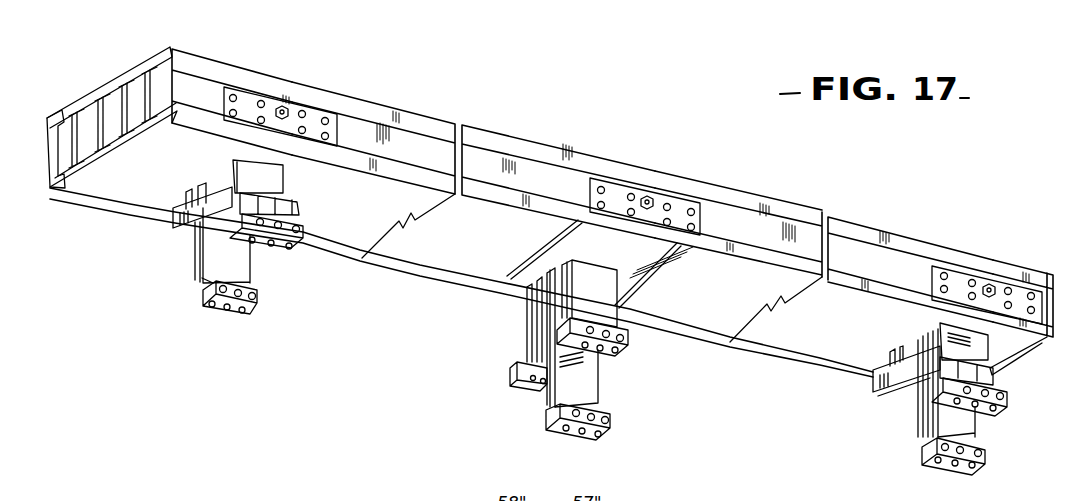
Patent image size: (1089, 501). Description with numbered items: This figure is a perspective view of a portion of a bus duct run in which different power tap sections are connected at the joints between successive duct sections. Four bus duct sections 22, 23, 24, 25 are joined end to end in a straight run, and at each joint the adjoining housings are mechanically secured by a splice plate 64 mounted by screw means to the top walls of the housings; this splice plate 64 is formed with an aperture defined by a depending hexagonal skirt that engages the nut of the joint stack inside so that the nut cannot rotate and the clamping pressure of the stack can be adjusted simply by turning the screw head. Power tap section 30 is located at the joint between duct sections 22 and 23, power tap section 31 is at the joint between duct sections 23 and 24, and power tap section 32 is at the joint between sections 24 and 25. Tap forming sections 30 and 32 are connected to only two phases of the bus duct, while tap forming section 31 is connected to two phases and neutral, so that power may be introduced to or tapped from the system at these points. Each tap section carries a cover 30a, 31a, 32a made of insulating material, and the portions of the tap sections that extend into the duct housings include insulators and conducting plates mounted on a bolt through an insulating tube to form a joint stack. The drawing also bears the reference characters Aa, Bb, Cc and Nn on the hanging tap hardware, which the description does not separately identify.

The bus duct section 22 is at (209, 64).
The bus duct section 23 is at (655, 163).
The bus duct section 24 is at (655, 137).
The bus duct section 25 is at (1027, 268).
The splice plate 64 is at (305, 103).
The power tap section 30 is at (604, 300).
The power tap section 31 is at (726, 367).
The power tap section 32 is at (982, 427).
The cover 30a is at (217, 153).
The cover 31a is at (586, 237).
The cover 32a is at (900, 328).
The clamp block Aa is at (630, 343).
The terminal block Bb is at (193, 274).
The clamp block Cc is at (293, 210).
The nut block Nn is at (517, 373).